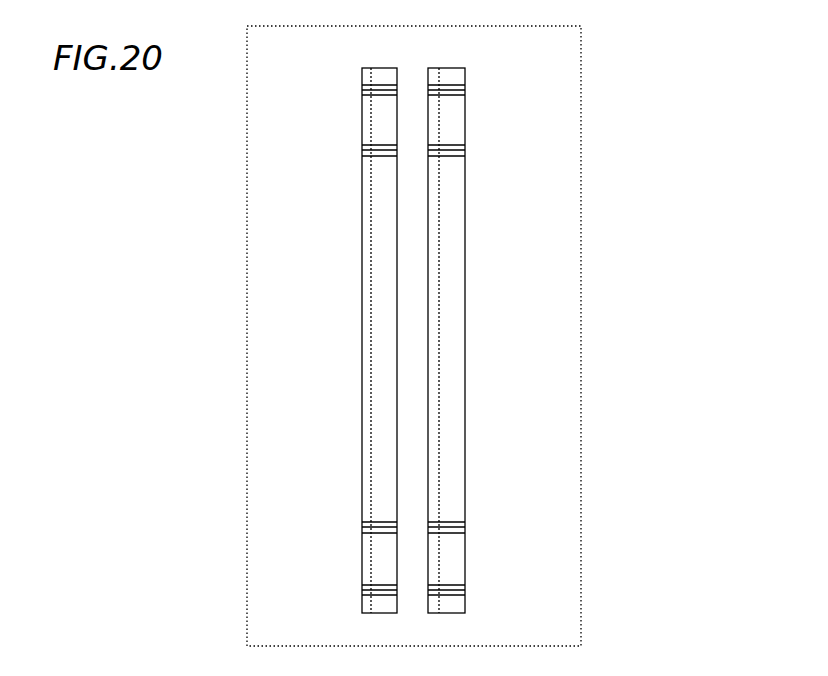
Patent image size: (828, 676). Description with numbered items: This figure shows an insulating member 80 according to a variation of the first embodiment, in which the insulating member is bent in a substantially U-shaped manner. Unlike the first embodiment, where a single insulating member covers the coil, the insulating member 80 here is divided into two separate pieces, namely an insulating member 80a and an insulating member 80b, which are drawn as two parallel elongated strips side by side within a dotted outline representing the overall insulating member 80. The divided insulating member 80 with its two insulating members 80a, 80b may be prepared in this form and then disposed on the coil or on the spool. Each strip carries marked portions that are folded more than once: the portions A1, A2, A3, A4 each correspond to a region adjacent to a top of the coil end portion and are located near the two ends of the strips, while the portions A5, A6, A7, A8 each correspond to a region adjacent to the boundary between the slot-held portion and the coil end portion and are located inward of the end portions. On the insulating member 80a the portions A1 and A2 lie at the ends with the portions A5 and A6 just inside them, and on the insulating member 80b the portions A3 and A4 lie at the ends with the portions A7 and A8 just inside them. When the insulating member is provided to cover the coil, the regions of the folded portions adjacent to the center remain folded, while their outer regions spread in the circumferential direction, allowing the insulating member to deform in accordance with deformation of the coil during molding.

The insulating member 80 is at (582, 126).
The insulating member 80a is at (491, 324).
The insulating member 80b is at (333, 323).
The portion A1 is at (465, 92).
The portion A2 is at (465, 594).
The portion A3 is at (362, 92).
The portion A4 is at (362, 592).
The portion A5 is at (465, 152).
The portion A6 is at (465, 527).
The portion A7 is at (362, 152).
The portion A8 is at (362, 530).